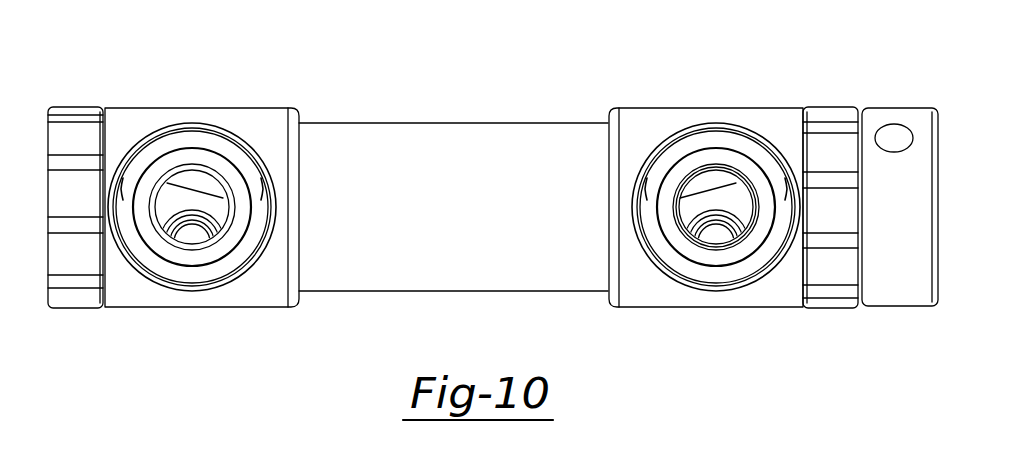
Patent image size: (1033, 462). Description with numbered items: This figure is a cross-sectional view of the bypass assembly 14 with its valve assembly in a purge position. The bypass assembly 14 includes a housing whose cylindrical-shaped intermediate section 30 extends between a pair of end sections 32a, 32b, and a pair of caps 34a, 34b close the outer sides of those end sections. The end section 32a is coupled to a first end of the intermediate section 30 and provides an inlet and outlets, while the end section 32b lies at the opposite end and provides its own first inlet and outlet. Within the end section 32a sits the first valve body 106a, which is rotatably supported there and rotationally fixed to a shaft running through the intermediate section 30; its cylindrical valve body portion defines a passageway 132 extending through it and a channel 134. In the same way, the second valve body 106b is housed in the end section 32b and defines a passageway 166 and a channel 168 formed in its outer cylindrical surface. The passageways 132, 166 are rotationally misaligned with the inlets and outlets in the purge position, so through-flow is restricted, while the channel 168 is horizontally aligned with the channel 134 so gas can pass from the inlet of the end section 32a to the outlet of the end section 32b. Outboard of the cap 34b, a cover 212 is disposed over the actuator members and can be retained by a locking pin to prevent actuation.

The bypass assembly 14 is at (476, 108).
The intermediate section 30 is at (430, 122).
The end section 32a is at (267, 110).
The end section 32b is at (765, 122).
The cap 34a is at (80, 138).
The cap 34b is at (825, 140).
The first valve body 106a is at (213, 212).
The second valve body 106b is at (693, 213).
The passageway 132 is at (193, 235).
The channel 134 is at (193, 178).
The passageway 166 is at (713, 233).
The channel 168 is at (715, 179).
The cover 212 is at (887, 298).